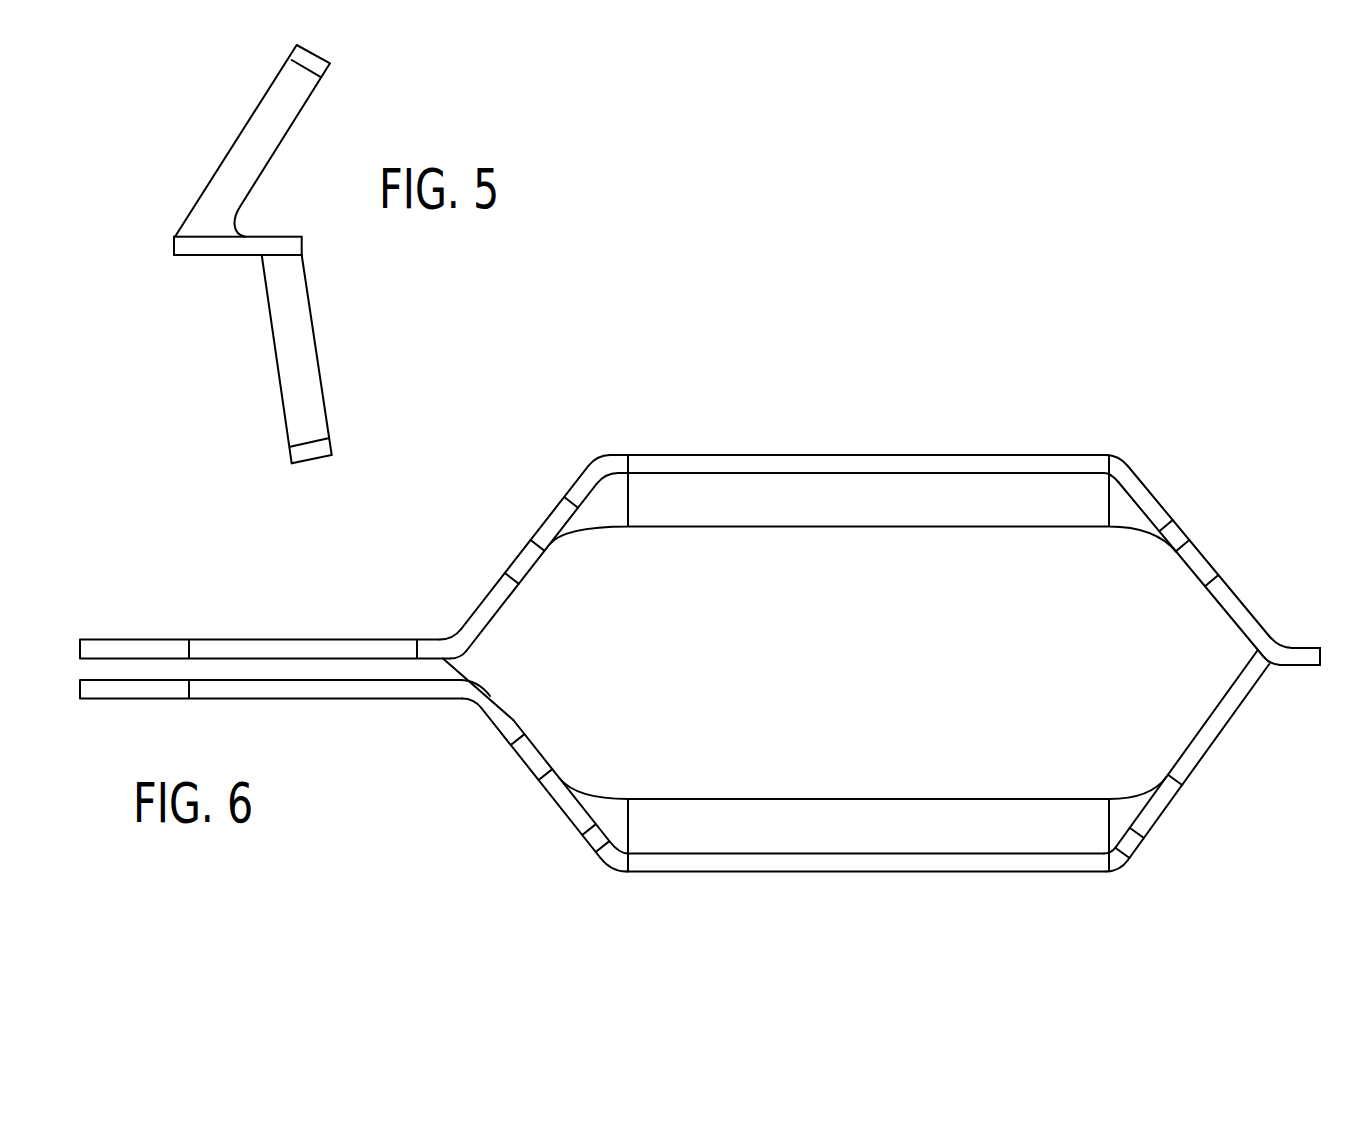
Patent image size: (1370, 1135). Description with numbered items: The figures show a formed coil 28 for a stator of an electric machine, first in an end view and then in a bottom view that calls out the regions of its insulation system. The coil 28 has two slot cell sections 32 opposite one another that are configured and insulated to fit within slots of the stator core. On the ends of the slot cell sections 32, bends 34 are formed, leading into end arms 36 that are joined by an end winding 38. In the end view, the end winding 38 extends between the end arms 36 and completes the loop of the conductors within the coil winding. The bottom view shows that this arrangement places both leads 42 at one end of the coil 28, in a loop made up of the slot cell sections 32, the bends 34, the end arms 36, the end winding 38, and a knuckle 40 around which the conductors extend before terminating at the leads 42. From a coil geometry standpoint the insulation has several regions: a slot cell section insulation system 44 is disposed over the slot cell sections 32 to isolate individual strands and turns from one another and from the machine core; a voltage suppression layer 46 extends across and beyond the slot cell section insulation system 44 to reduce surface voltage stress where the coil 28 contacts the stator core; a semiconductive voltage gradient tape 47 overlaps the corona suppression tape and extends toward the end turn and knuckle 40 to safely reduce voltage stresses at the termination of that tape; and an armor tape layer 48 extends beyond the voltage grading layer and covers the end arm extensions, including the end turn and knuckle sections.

In FIG. 5, the coil 28 is at (348, 116).
In FIG. 6, the coil 28 is at (719, 643).
In FIG. 6, the slot cell sections 32 is at (868, 453).
In FIG. 6, the bends 34 is at (602, 455).
In FIG. 5, the end arms 36 is at (265, 130).
In FIG. 6, the end arms 36 is at (1168, 503).
In FIG. 5, the end winding 38 is at (228, 249).
In FIG. 6, the end winding 38 is at (1325, 653).
In FIG. 6, the knuckle 40 is at (468, 670).
In FIG. 6, the leads 42 is at (125, 685).
In FIG. 6, the slot cell section insulation system 44 is at (742, 456).
In FIG. 6, the voltage suppression layer 46 is at (622, 460).
In FIG. 6, the semiconductive voltage gradient tape 47 is at (565, 497).
In FIG. 6, the armor tape layer 48 is at (505, 573).